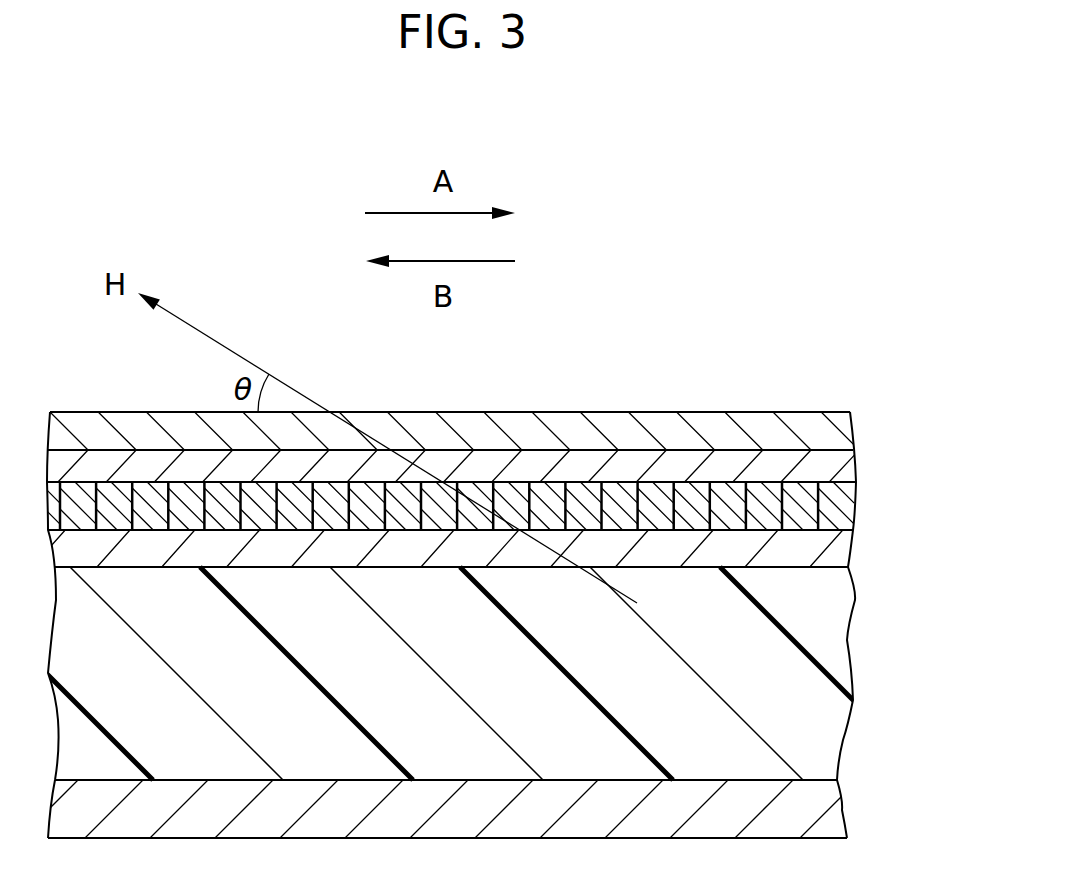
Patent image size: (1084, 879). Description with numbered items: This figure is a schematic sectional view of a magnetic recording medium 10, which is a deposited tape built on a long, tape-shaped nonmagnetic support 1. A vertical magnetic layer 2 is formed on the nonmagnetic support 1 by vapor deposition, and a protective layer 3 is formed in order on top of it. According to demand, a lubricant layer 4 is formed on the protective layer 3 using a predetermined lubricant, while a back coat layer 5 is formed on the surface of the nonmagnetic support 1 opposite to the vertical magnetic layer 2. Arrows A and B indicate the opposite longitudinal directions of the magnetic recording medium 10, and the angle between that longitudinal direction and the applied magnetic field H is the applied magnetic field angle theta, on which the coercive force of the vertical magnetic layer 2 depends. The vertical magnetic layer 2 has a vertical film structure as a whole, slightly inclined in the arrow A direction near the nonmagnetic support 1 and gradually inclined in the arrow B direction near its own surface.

The nonmagnetic support 1 is at (828, 650).
The vertical magnetic layer 2 is at (842, 512).
The protective layer 3 is at (850, 468).
The lubricant layer 4 is at (847, 428).
The back coat layer 5 is at (830, 815).
The magnetic recording medium 10 is at (688, 292).